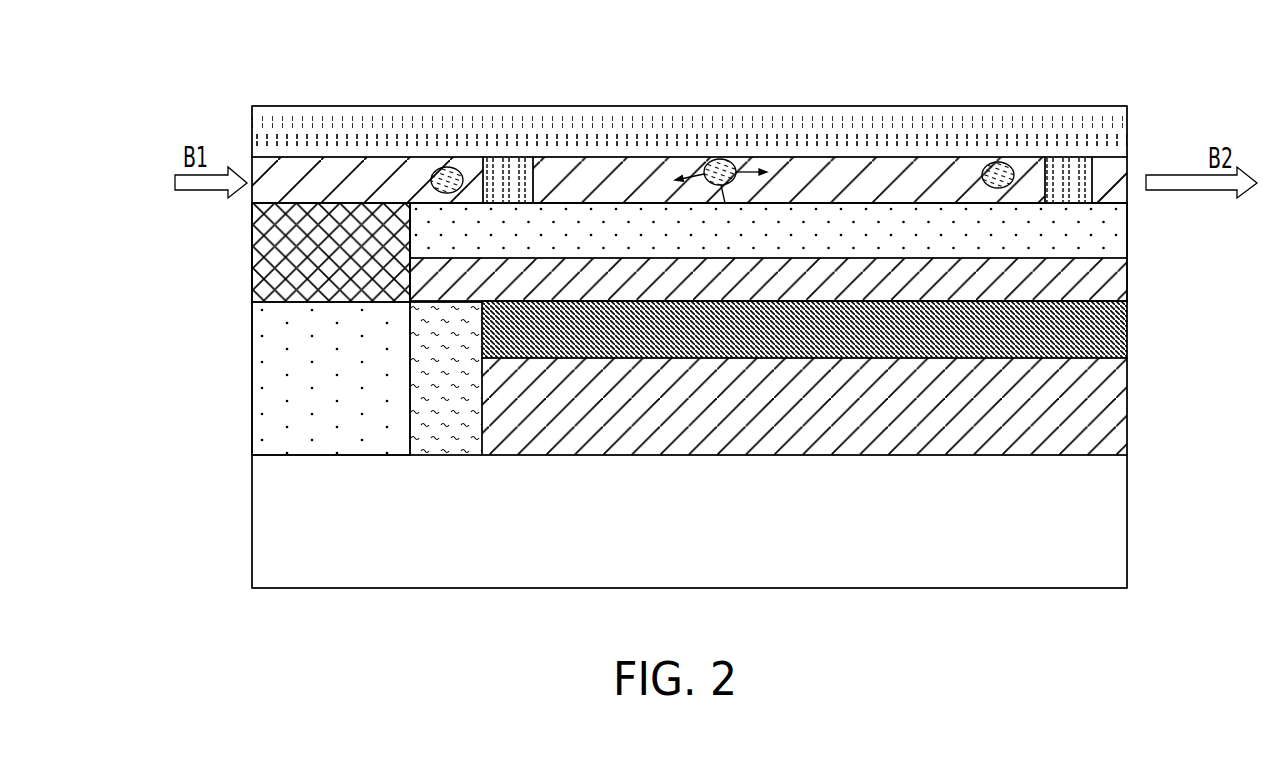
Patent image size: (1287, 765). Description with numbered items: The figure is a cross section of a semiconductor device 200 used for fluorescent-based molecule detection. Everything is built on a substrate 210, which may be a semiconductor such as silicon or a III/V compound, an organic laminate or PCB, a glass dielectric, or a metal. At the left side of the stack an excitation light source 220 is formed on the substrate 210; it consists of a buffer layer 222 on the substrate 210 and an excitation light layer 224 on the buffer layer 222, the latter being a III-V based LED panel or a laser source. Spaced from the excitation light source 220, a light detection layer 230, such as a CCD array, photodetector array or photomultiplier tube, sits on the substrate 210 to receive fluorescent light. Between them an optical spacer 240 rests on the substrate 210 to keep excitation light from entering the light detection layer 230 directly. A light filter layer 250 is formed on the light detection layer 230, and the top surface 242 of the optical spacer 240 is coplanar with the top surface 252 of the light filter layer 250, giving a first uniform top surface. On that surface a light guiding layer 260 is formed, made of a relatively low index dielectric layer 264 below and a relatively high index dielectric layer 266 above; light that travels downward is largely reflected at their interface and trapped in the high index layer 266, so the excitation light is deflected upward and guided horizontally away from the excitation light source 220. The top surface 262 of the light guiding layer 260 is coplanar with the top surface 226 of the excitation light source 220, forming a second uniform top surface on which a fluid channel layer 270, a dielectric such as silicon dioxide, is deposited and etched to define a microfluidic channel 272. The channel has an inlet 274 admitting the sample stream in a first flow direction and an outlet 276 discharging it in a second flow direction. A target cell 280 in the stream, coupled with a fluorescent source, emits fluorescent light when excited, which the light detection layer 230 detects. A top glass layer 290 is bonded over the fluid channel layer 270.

The semiconductor device 200 is at (143, 131).
The substrate 210 is at (832, 544).
The excitation light source 220 is at (213, 240).
The buffer layer 222 is at (287, 365).
The excitation light layer 224 is at (287, 262).
The top surface of the excitation light source 226 is at (272, 186).
The light detection layer 230 is at (832, 417).
The optical spacer 240 is at (463, 402).
The top surface of the optical spacer 242 is at (431, 313).
The light filter layer 250 is at (1118, 331).
The top surface of the light filter layer 252 is at (577, 310).
The light guiding layer 260 is at (1200, 218).
The top surface of the light guiding layer 262 is at (776, 218).
The relatively low index dielectric layer 264 is at (1110, 283).
The relatively high index dielectric layer 266 is at (1110, 228).
The fluid channel layer 270 is at (1080, 170).
The microfluidic channel 272 is at (898, 196).
The inlet 274 is at (338, 196).
The outlet 276 is at (1120, 163).
The target cell 280 is at (715, 158).
The top glass layer 290 is at (875, 138).